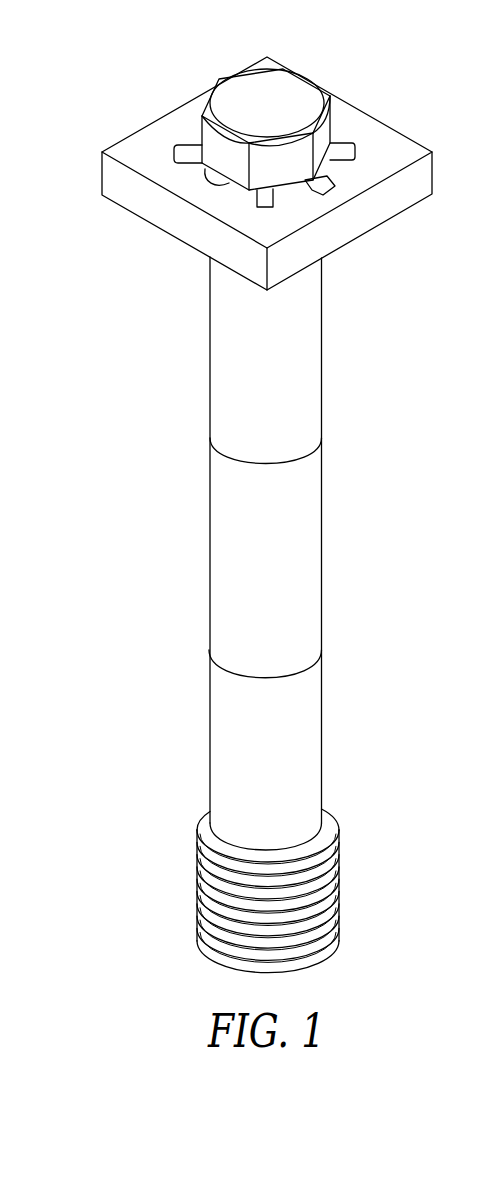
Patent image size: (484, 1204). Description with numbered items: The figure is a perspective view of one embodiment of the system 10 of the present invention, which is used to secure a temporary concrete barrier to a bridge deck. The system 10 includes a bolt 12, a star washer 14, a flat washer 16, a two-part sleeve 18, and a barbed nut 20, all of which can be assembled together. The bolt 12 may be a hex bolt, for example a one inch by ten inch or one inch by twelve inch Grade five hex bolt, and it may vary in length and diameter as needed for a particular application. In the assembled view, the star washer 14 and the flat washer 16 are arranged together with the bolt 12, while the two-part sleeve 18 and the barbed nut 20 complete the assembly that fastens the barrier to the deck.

The system 10 is at (107, 94).
The bolt 12 is at (288, 97).
The star washer 14 is at (357, 150).
The flat washer 16 is at (101, 171).
The two-part sleeve 18 is at (322, 372).
The barbed nut 20 is at (340, 877).